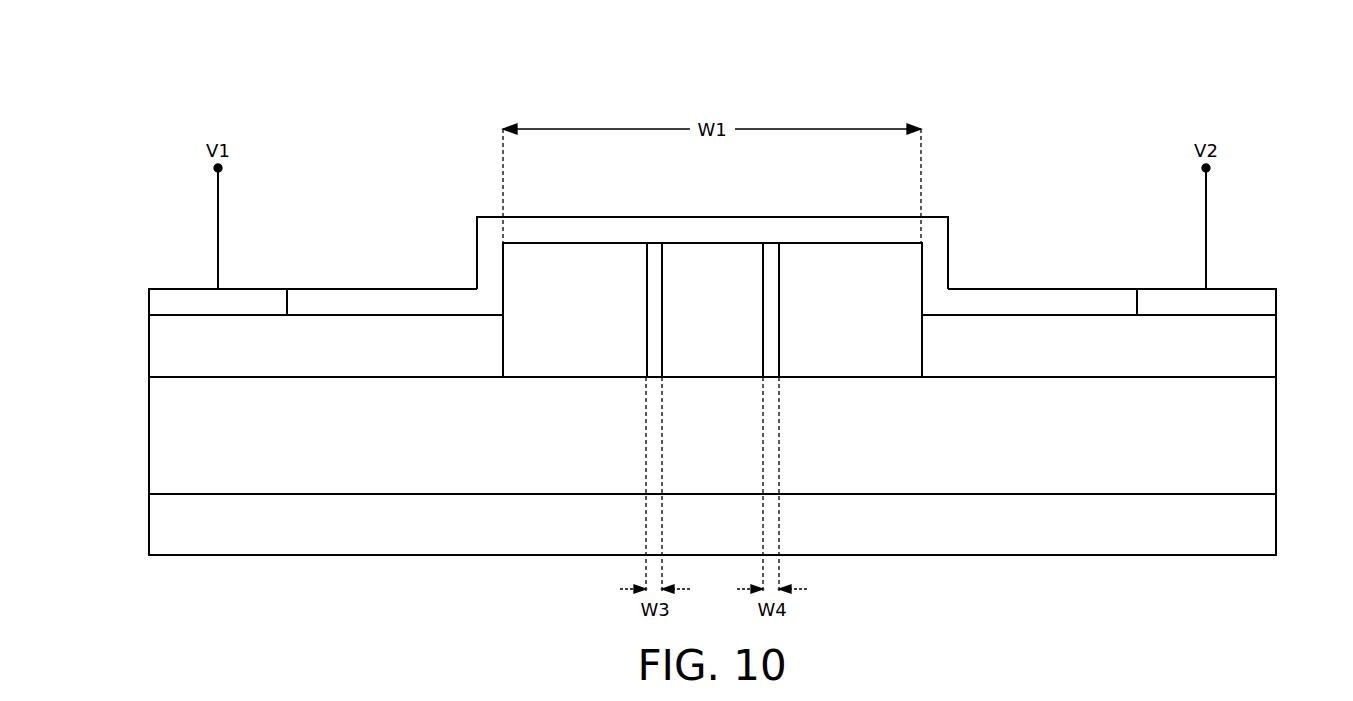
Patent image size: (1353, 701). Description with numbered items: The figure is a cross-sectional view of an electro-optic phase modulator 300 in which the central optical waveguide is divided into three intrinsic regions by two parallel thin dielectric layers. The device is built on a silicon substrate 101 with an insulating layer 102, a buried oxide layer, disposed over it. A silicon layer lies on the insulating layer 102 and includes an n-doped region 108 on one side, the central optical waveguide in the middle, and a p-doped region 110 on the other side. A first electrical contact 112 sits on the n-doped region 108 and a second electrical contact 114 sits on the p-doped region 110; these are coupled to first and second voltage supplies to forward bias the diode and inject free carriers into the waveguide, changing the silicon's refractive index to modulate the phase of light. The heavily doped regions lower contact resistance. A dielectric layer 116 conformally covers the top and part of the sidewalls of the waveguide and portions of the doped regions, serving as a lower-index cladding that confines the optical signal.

The electro-optic phase modulator 300 is at (103, 92).
The silicon substrate 101 is at (695, 539).
The insulating layer 102 is at (695, 449).
The n-doped region 108 is at (308, 359).
The p-doped region 110 is at (1081, 359).
The first electrical contact 112 is at (163, 302).
The second electrical contact 114 is at (1263, 302).
The dielectric layer 116 is at (849, 230).